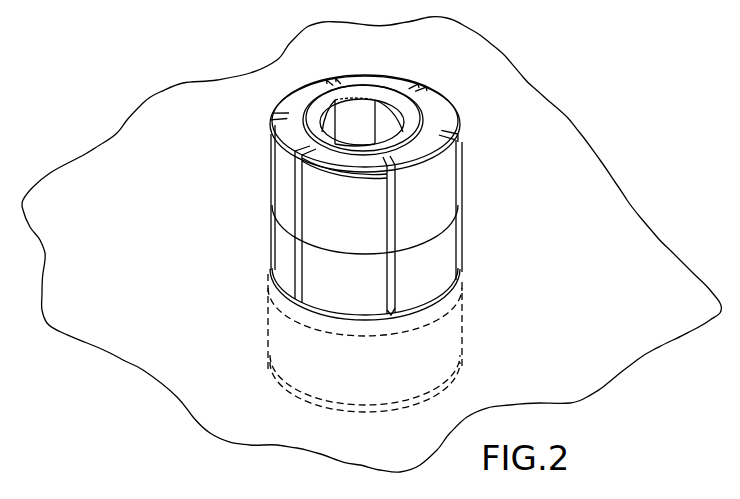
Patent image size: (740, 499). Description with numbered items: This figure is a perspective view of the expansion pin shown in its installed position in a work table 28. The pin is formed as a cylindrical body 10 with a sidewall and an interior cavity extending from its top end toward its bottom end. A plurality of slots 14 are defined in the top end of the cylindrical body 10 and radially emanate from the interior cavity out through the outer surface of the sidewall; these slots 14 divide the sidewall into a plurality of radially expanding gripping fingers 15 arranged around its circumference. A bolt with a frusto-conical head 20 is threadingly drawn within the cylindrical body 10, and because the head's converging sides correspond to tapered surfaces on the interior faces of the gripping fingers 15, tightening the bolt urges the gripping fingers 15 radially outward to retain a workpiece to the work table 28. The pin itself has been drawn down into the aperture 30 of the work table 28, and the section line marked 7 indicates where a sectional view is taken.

The section line 7- 7 is at (217, 182).
The cylindrical body 10 is at (366, 220).
The slots 14 is at (340, 80).
The gripping fingers 15 is at (288, 185).
The frusto-conical head 20 is at (425, 118).
The work table 28 is at (581, 149).
The aperture 30 is at (268, 306).